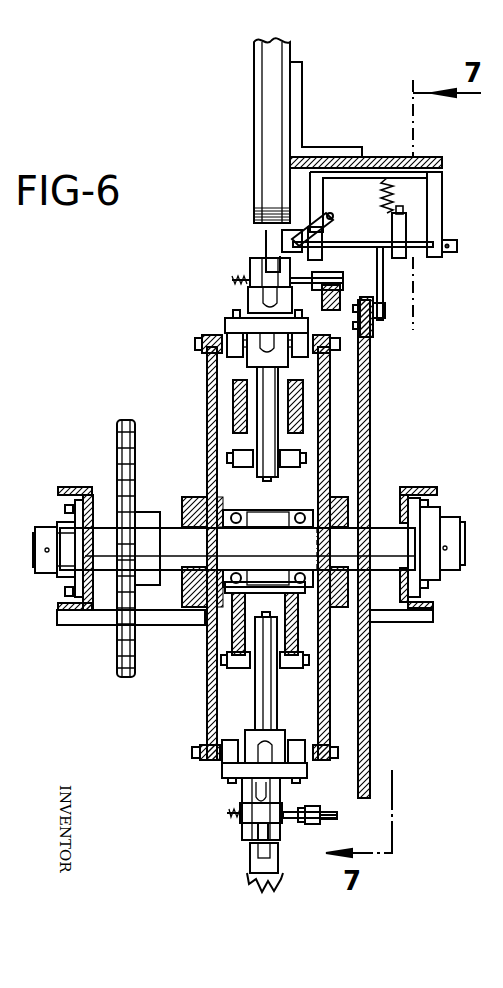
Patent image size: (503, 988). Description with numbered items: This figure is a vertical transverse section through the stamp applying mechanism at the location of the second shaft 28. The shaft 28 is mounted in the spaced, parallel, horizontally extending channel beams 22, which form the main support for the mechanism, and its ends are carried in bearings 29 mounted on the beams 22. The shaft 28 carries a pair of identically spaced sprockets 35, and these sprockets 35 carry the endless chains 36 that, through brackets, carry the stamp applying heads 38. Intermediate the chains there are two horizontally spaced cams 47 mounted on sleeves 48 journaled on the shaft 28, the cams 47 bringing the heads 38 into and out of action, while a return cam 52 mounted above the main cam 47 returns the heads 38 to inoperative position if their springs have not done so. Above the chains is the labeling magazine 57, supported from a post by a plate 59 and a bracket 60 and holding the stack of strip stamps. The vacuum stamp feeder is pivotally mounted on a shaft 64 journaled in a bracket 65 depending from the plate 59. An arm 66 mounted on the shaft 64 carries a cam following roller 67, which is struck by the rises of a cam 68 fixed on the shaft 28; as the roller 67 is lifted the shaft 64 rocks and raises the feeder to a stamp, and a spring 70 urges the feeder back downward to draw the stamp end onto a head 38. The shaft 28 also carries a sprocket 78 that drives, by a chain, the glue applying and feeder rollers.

The channel beam 22 is at (85, 487).
The second shaft 28 is at (352, 545).
The bearing 29 is at (60, 520).
The sprocket 35 is at (330, 390).
The endless chain 36 is at (204, 340).
The stamp applying head 38 is at (246, 262).
The cam 47 is at (233, 625).
The sleeve 48 is at (262, 512).
The return cam 52 is at (233, 400).
The labeling magazine 57 is at (254, 118).
The plate 59 is at (430, 157).
The bracket 60 is at (318, 150).
The shaft 64 is at (350, 243).
The bracket 65 is at (437, 213).
The arm 66 is at (384, 283).
The cam following roller 67 is at (375, 302).
The cam 68 is at (372, 448).
The spring 70 is at (395, 195).
The sprocket 78 is at (130, 420).